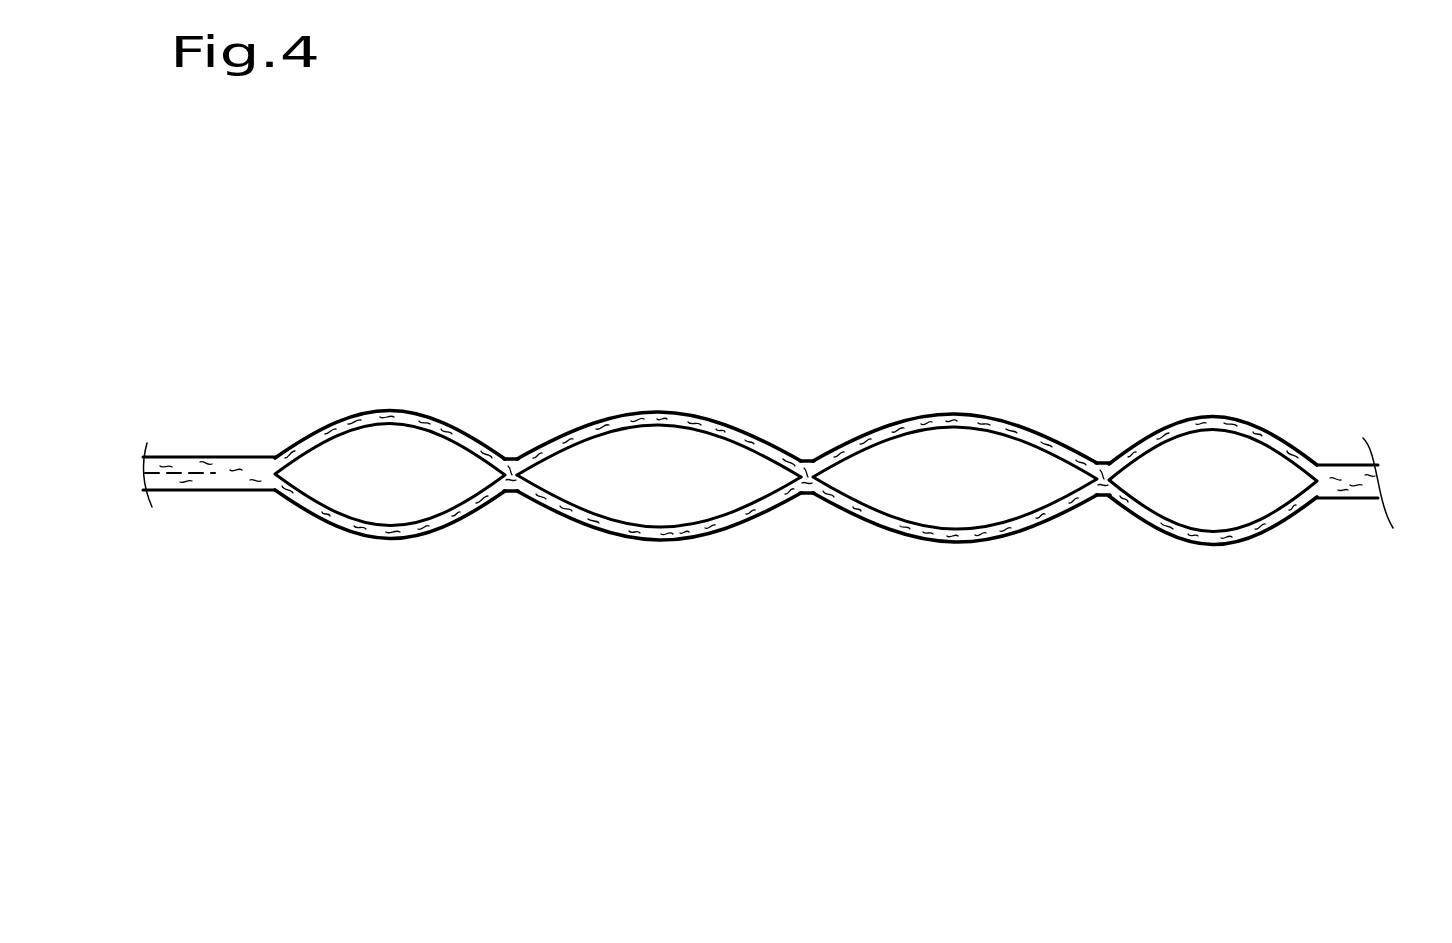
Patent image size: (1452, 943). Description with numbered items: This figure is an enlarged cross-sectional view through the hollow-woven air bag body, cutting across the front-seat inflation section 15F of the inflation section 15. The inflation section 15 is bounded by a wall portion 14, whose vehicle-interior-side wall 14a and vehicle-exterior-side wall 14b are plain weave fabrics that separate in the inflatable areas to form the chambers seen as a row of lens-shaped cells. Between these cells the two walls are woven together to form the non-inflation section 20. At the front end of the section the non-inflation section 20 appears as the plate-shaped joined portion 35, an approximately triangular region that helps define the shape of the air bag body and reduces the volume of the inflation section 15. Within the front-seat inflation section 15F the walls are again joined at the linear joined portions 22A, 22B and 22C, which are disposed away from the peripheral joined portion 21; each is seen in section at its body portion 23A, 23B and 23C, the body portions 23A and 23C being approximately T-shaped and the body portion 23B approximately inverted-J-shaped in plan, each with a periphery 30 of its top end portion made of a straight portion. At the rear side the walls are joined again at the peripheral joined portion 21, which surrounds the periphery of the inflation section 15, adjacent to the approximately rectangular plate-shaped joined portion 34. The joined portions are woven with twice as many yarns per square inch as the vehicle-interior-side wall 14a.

The plate-shaped joined portion 35 is at (190, 466).
The non-inflation section 20 is at (261, 468).
The peripheral joined portion 21 is at (1332, 483).
The body portion 23A is at (481, 366).
The linear joined portion 22A is at (511, 467).
The body portion 23B is at (822, 374).
The linear joined portion 22B is at (806, 465).
The body portion 23C is at (1117, 375).
The linear joined portion 22C is at (1103, 467).
The wall portion 14 is at (659, 470).
The vehicle-exterior-side wall 14b is at (658, 412).
The vehicle-interior-side wall 14a is at (658, 540).
The periphery 30 is at (1405, 396).
The plate-shaped joined portion 34 is at (1382, 471).
The inflation section 15 is at (796, 486).
The front-seat inflation section 15F is at (1111, 622).